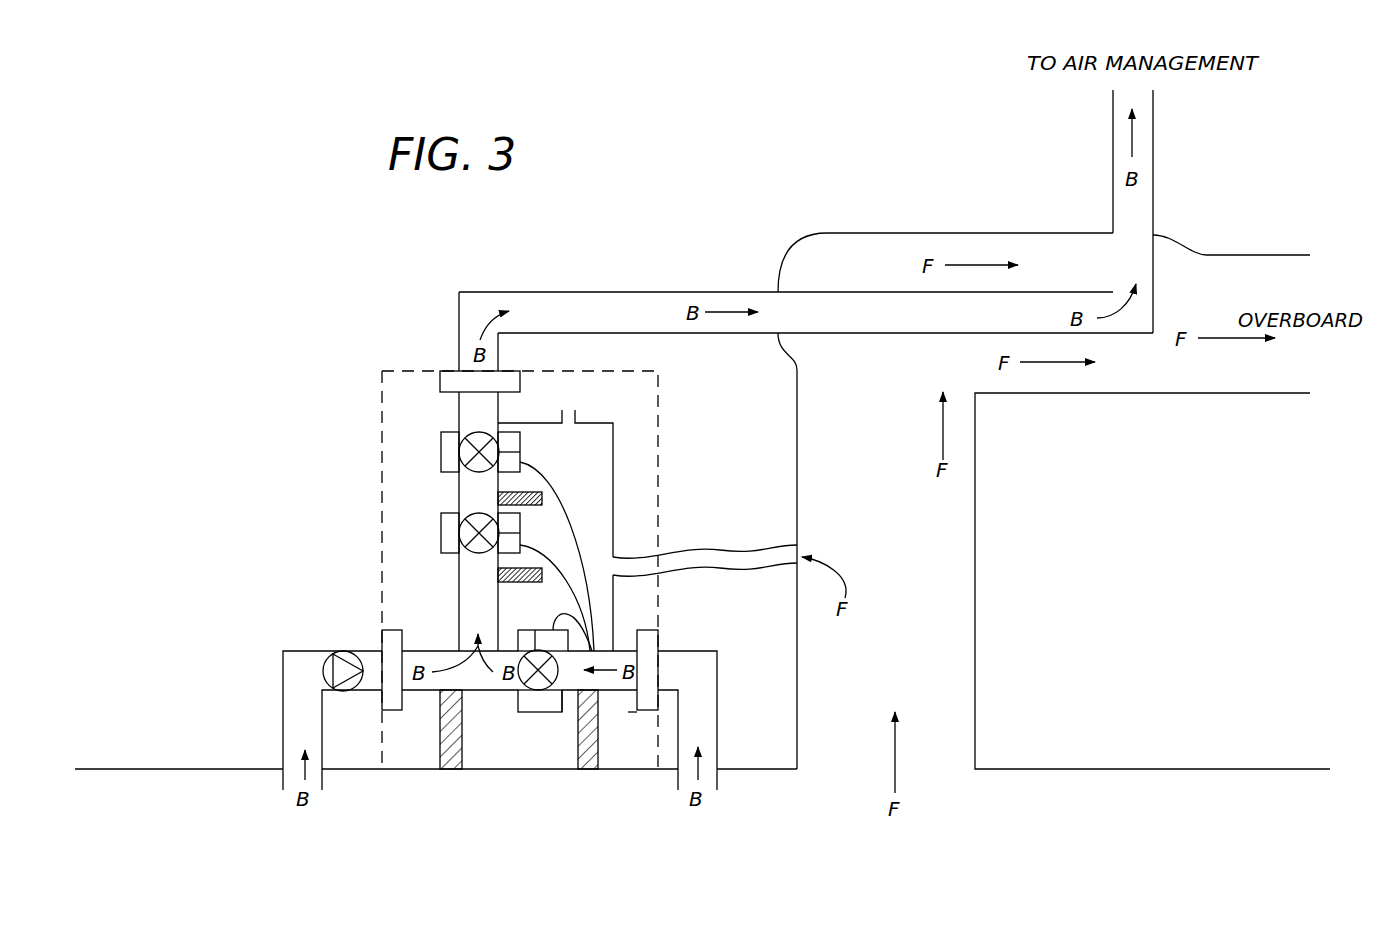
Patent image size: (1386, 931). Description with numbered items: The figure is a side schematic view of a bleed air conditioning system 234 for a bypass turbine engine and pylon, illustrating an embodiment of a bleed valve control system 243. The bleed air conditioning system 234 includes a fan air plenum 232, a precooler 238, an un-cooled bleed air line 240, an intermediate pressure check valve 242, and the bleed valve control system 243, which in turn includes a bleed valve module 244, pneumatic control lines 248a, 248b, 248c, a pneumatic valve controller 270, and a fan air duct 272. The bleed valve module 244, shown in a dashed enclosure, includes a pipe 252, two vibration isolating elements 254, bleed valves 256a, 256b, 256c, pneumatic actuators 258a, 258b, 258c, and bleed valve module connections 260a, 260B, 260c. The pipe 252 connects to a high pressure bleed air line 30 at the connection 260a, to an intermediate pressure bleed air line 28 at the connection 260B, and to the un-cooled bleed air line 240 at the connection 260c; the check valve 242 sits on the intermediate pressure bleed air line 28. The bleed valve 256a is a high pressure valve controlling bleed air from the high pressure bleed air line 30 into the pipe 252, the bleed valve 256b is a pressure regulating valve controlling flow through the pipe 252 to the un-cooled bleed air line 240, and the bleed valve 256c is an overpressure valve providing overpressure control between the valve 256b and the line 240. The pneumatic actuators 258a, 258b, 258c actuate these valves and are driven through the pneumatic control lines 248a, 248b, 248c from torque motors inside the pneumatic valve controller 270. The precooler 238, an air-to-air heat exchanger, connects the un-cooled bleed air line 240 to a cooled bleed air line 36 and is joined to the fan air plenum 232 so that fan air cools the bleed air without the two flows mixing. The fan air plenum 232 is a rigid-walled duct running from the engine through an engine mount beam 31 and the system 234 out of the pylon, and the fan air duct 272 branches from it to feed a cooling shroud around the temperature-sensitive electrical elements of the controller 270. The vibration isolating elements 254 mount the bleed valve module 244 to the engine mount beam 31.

The bleed air conditioning system 234 is at (321, 257).
The bleed valve control system 243 is at (321, 481).
The bleed valve module 244 is at (375, 387).
The un-cooled bleed air line 240 is at (679, 283).
The precooler 238 is at (952, 232).
The cooled bleed air line 36 is at (1154, 177).
The fan air plenum 232 is at (975, 668).
The pneumatic valve controller 270 is at (624, 463).
The fan air duct 272 is at (700, 547).
The bleed valve module connection 260c is at (438, 373).
The bleed valve 256c is at (460, 437).
The pneumatic actuator 258c is at (447, 450).
The pneumatic control line 248c is at (458, 474).
The bleed valve 256b is at (462, 508).
The pneumatic actuator 258b is at (444, 540).
The pneumatic control line 248b is at (460, 550).
The pipe 252 is at (458, 606).
The intermediate pressure check valve 242 is at (343, 651).
The intermediate pressure bleed air line 28 is at (283, 718).
The high pressure bleed air line 30 is at (717, 728).
The engine mount beam 31 is at (205, 768).
The bleed valve module connection 260B is at (398, 710).
The bleed valve module connection 260a is at (628, 712).
The bleed valve 256a is at (525, 686).
The pneumatic actuator 258a is at (533, 712).
The pneumatic control line 248a is at (560, 691).
The vibration isolating element 254 is at (447, 769).